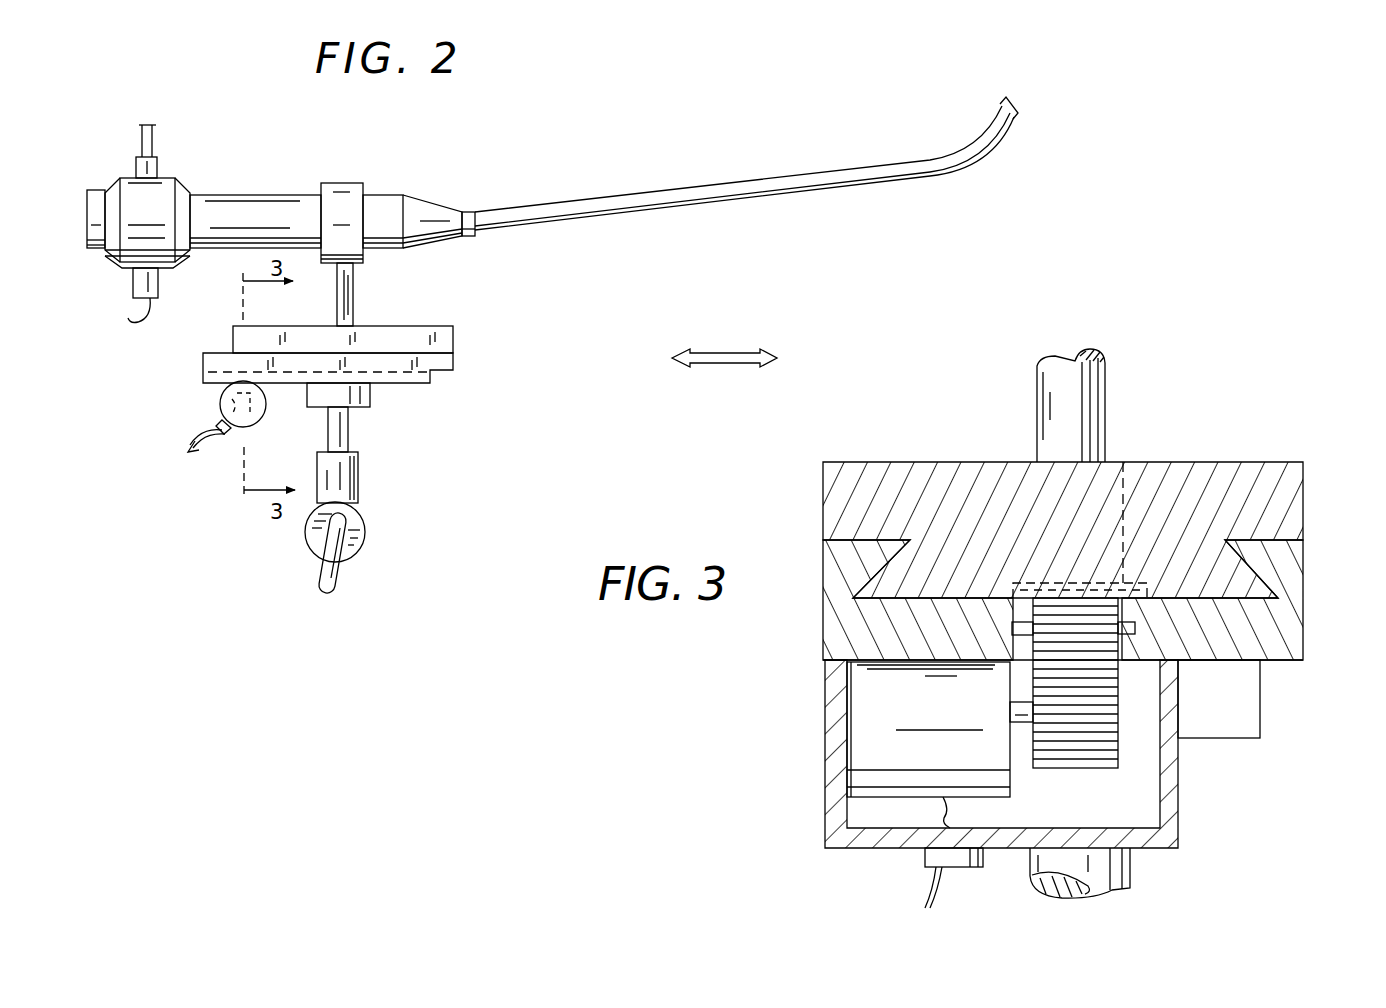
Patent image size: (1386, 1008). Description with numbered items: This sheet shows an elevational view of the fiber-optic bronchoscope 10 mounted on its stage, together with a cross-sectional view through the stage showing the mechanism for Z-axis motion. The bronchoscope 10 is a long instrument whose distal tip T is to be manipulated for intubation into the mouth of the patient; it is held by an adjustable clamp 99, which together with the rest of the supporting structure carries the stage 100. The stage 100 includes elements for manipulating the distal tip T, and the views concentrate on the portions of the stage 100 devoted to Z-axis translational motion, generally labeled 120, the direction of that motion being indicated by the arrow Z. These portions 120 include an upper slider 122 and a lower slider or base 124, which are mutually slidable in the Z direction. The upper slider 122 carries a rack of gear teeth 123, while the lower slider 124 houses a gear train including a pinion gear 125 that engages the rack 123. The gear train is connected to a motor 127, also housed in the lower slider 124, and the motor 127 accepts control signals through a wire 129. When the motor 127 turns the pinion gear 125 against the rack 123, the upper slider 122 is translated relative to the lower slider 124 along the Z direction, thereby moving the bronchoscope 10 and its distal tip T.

In FIG. 2, the fiber-optic bronchoscope 10 is at (480, 184).
In FIG. 2, the distal tip T is at (1020, 102).
In FIG. 2, the adjustable clamp 99 is at (368, 535).
In FIG. 2, the stage 100 is at (420, 341).
In FIG. 2, the Z-axis translational motion portions 120 is at (389, 487).
In FIG. 3, the Z-axis translational motion portions 120 is at (916, 430).
In FIG. 2, the upper slider 122 is at (445, 326).
In FIG. 3, the upper slider 122 is at (1235, 462).
In FIG. 3, the rack of gear teeth 123 is at (1125, 460).
In FIG. 2, the lower slider 124 is at (430, 383).
In FIG. 3, the lower slider 124 is at (1305, 655).
In FIG. 3, the pinion gear 125 is at (1115, 608).
In FIG. 2, the motor 127 is at (221, 405).
In FIG. 3, the motor 127 is at (863, 696).
In FIG. 3, the wire 129 is at (928, 896).
In FIG. 2, the arrow Z is at (731, 368).